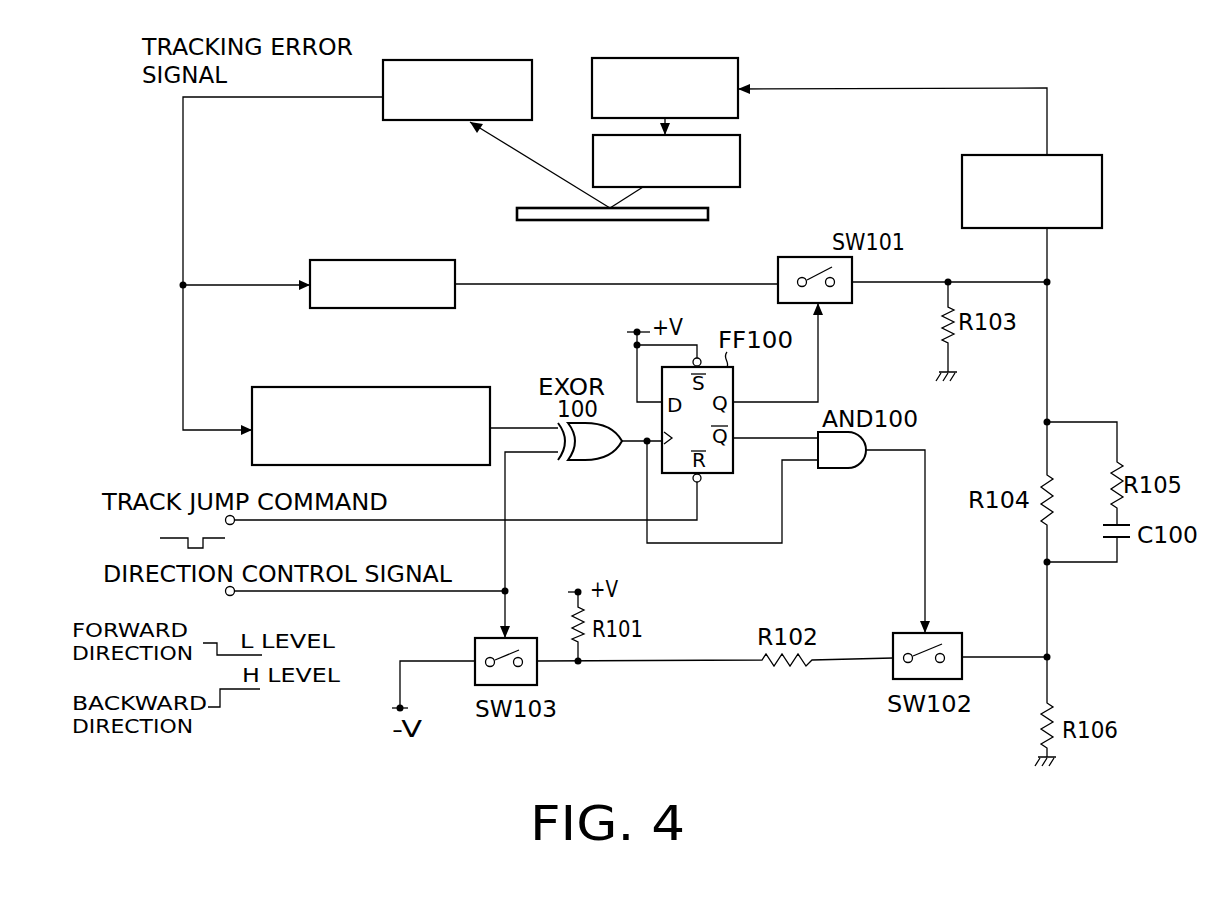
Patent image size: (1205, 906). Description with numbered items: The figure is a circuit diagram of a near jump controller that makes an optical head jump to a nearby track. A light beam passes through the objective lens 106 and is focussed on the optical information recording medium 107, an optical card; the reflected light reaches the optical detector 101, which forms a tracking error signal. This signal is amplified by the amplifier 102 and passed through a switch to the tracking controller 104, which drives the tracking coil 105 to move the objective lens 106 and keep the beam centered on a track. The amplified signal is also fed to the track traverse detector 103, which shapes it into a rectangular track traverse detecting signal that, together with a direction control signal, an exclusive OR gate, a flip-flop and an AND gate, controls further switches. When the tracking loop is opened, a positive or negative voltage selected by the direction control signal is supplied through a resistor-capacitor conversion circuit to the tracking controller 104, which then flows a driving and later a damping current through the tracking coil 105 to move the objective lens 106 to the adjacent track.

The optical detector 101 is at (468, 60).
The amplifier 102 is at (370, 260).
The track traverse detector 103 is at (405, 387).
The tracking controller 104 is at (1080, 155).
The tracking coil 105 is at (688, 58).
The objective lens 106 is at (742, 163).
The optical information recording medium 107 is at (710, 212).